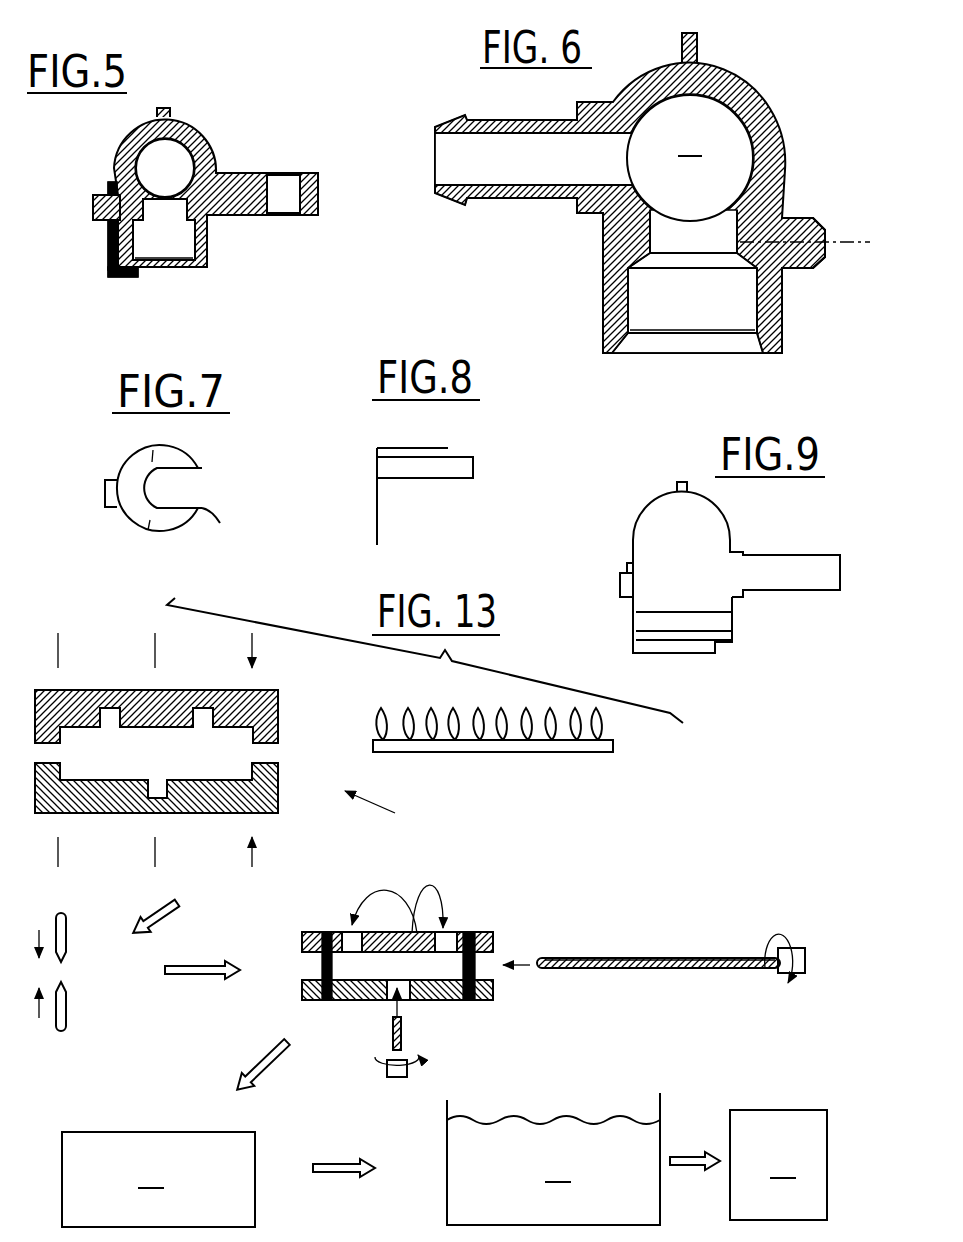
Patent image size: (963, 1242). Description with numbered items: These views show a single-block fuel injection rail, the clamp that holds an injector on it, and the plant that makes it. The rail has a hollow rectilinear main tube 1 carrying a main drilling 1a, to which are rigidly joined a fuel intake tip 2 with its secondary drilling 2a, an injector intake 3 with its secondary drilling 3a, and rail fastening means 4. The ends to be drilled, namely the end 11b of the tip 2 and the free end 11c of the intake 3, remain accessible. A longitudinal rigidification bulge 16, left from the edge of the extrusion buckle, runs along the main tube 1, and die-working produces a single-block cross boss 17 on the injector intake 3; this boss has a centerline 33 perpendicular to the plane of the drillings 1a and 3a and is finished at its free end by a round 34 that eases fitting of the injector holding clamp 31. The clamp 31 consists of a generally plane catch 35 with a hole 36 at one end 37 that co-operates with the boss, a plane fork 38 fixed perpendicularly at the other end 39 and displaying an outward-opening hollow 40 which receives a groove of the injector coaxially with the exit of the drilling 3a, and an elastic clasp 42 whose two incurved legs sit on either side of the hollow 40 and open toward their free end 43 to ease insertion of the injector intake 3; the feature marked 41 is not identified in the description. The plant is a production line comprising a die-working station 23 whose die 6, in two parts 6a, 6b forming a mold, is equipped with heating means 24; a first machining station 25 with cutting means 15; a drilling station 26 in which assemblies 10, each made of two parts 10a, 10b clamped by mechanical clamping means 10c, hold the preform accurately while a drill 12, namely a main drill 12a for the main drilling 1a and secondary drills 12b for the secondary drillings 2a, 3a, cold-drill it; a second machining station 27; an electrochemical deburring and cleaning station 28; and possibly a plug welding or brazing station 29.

In FIG. 5, the main tube 1 is at (203, 138).
In FIG. 6, the main tube 1 is at (755, 105).
In FIG. 9, the main tube 1 is at (736, 539).
In FIG. 5, the main drilling 1a is at (152, 162).
In FIG. 6, the main drilling 1a is at (690, 158).
In FIG. 6, the fuel intake tip 2 is at (512, 200).
In FIG. 6, the secondary drilling of the fuel intake tip 2a is at (458, 153).
In FIG. 5, the injector intake 3 is at (172, 262).
In FIG. 6, the injector intake 3 is at (722, 355).
In FIG. 5, the secondary drilling of the injector intake 3a is at (165, 240).
In FIG. 6, the secondary drilling of the injector intake 3a is at (650, 300).
In FIG. 5, the rail fastening means 4 is at (255, 195).
In FIG. 13, the die 6 is at (178, 754).
In FIG. 13, the die part 6a is at (178, 703).
In FIG. 13, the die part 6b is at (207, 797).
In FIG. 13, the assembly 10 is at (390, 951).
In FIG. 13, the assembly part 10a is at (302, 940).
In FIG. 13, the assembly part 10b is at (302, 995).
In FIG. 13, the mechanical clamping means 10c is at (320, 932).
In FIG. 6, the end of the fuel intake tip 11b is at (435, 127).
In FIG. 5, the end of the injector intake 11c is at (207, 266).
In FIG. 6, the end of the injector intake 11c is at (608, 330).
In FIG. 13, the drill 12 is at (420, 1037).
In FIG. 13, the main drill 12a is at (680, 969).
In FIG. 13, the secondary drill 12b is at (390, 1068).
In FIG. 13, the cutting means 15 is at (60, 1022).
In FIG. 5, the longitudinal rigidification bulge 16 is at (170, 108).
In FIG. 6, the longitudinal rigidification bulge 16 is at (697, 45).
In FIG. 5, the cross boss 17 is at (100, 213).
In FIG. 6, the cross boss 17 is at (812, 270).
In FIG. 9, the cross boss 17 is at (620, 578).
In FIG. 13, the die-working station 23 is at (391, 813).
In FIG. 13, the heating means 24 is at (577, 752).
In FIG. 13, the first machining station 25 is at (86, 1002).
In FIG. 13, the drilling station 26 is at (570, 951).
In FIG. 13, the second machining station 27 is at (158, 1179).
In FIG. 13, the electrochemical deburring and cleaning station 28 is at (553, 1159).
In FIG. 13, the plug welding or brazing station 29 is at (778, 1165).
In FIG. 5, the injector holding clamp 31 is at (106, 278).
In FIG. 7, the injector holding clamp 31 is at (100, 493).
In FIG. 8, the injector holding clamp 31 is at (393, 445).
In FIG. 9, the injector holding clamp 31 is at (625, 620).
In FIG. 6, the centerline of the boss 33 is at (785, 220).
In FIG. 6, the round 34 is at (825, 263).
In FIG. 5, the catch 35 is at (108, 258).
In FIG. 7, the catch 35 is at (104, 485).
In FIG. 8, the catch 35 is at (380, 500).
In FIG. 9, the catch 35 is at (627, 563).
In FIG. 5, the hole 36 is at (108, 188).
In FIG. 8, the hole 36 is at (376, 519).
In FIG. 9, the hole 36 is at (620, 590).
In FIG. 8, the end of the catch 37 is at (377, 538).
In FIG. 5, the fork 38 is at (129, 278).
In FIG. 7, the fork 38 is at (152, 455).
In FIG. 8, the fork 38 is at (416, 448).
In FIG. 9, the fork 38 is at (670, 655).
In FIG. 8, the other end of the catch 39 is at (376, 452).
In FIG. 7, the hollow 40 is at (134, 541).
In FIG. 7, the slot 41 is at (190, 490).
In FIG. 7, the elastic clasp 42 is at (198, 466).
In FIG. 8, the elastic clasp 42 is at (463, 478).
In FIG. 9, the elastic clasp 42 is at (712, 645).
In FIG. 7, the free end of the clasp legs 43 is at (210, 468).
In FIG. 8, the free end of the clasp legs 43 is at (476, 462).
In FIG. 9, the free end of the clasp legs 43 is at (727, 627).